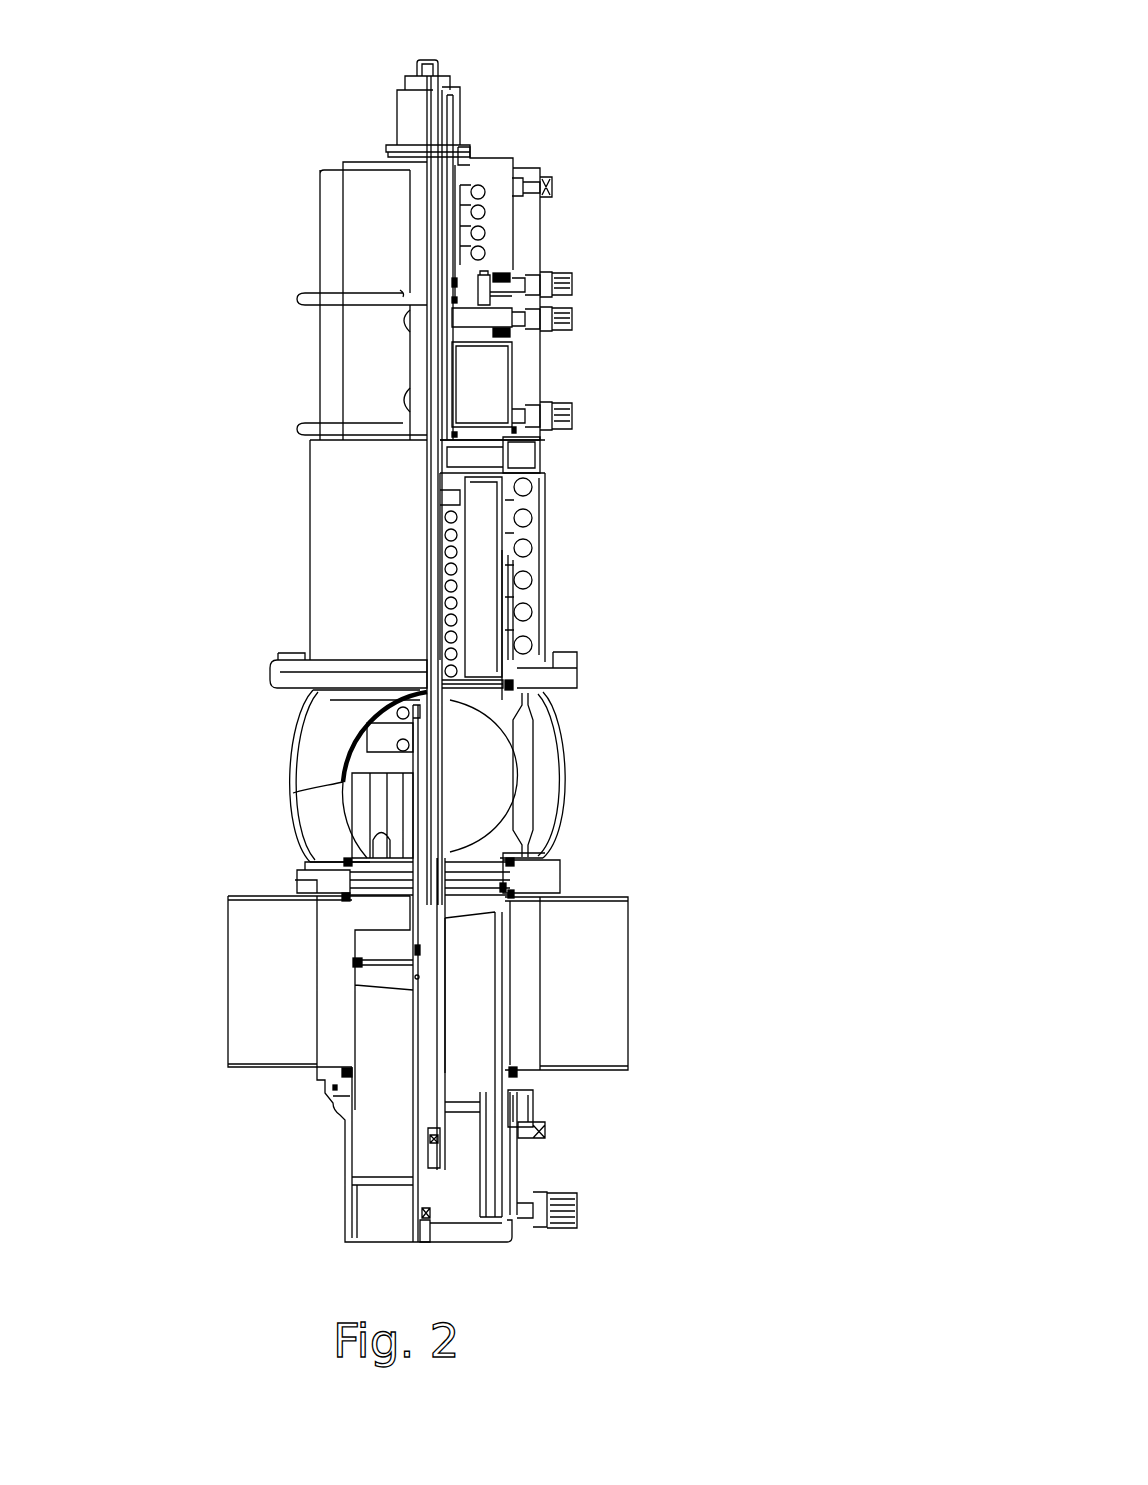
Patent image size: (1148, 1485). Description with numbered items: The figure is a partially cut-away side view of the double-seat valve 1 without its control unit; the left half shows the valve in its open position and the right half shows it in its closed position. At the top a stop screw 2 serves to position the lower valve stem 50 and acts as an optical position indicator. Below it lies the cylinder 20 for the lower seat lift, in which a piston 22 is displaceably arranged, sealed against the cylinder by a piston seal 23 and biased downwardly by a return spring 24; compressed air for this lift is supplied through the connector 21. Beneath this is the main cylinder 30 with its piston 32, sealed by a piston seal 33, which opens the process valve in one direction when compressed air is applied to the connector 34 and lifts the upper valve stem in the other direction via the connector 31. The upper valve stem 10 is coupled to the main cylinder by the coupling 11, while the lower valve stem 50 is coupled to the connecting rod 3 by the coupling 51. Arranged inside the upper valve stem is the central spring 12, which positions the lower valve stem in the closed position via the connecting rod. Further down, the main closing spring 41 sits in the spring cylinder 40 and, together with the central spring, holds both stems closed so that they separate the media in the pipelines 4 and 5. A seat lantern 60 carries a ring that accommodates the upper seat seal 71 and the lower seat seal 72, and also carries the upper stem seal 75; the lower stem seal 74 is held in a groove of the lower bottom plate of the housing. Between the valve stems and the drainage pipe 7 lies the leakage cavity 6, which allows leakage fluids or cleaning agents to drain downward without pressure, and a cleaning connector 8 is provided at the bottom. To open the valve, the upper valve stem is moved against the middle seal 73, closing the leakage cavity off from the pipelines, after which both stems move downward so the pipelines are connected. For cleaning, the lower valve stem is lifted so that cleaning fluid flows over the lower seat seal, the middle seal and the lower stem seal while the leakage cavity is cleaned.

The double-seat valve 1 is at (720, 283).
The stop screw 2 is at (443, 82).
The connecting rod 3 is at (427, 742).
The pipeline 4 is at (336, 834).
The pipeline 5 is at (299, 1012).
The leakage cavity 6 is at (470, 1022).
The drainage pipe 7 is at (520, 1100).
The cleaning connector 8 is at (560, 1205).
The upper valve stem 10 is at (443, 768).
The coupling 11 is at (448, 120).
The central spring 12 is at (452, 585).
The cylinder 20 is at (528, 218).
The connector 21 is at (560, 274).
The piston 22 is at (463, 277).
The piston seal 23 is at (510, 276).
The return spring 24 is at (478, 190).
The main cylinder 30 is at (525, 370).
The connector 31 is at (558, 415).
The piston 32 is at (478, 337).
The piston seal 33 is at (510, 333).
The connector 34 is at (557, 314).
The spring cylinder 40 is at (545, 478).
The main closing spring 41 is at (527, 516).
The lower valve stem 50 is at (500, 1028).
The coupling 51 is at (440, 1158).
The seat lantern 60 is at (516, 738).
The upper seat seal 71 is at (348, 862).
The lower seat seal 72 is at (345, 897).
The middle seal 73 is at (355, 962).
The lower stem seal 74 is at (513, 1072).
The upper stem seal 75 is at (513, 690).